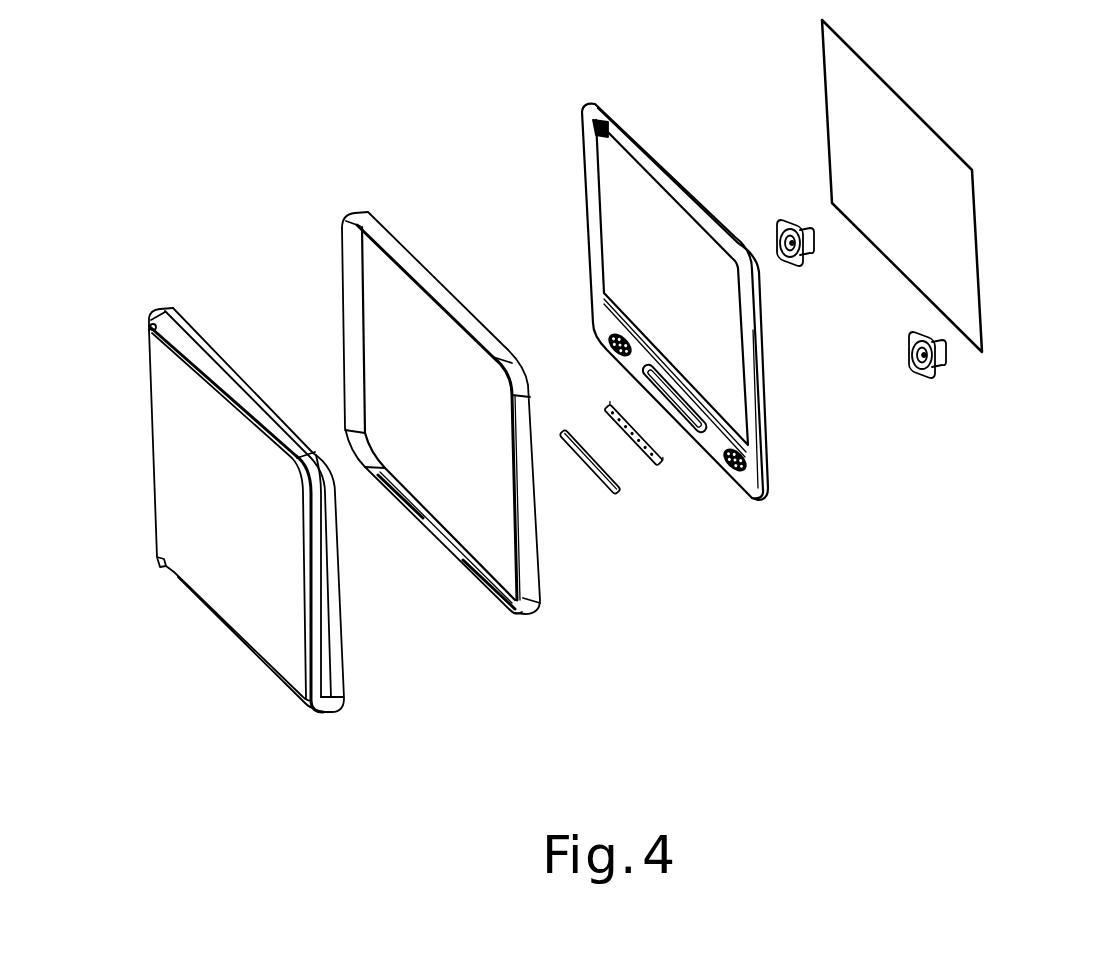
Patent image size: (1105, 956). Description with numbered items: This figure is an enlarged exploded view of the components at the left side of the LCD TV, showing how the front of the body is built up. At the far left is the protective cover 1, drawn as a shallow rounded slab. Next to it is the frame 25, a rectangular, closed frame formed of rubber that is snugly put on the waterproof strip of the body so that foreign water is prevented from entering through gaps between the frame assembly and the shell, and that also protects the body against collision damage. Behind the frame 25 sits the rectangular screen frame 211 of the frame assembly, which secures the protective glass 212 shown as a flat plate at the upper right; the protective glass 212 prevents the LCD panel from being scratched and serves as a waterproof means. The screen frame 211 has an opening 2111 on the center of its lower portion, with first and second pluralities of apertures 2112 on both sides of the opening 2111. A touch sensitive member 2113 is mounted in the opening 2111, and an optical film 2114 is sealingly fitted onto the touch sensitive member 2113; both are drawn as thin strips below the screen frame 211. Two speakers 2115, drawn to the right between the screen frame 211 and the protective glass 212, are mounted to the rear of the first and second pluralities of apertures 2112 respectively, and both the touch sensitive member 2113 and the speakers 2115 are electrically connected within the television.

The protective cover 1 is at (275, 405).
The frame 25 is at (422, 270).
The screen frame 211 is at (634, 341).
The opening 2111 is at (705, 435).
The plurality of apertures 2112 is at (593, 310).
The touch sensitive member 2113 is at (658, 468).
The optical film 2114 is at (620, 500).
The speakers 2115 is at (802, 257).
The protective glass 212 is at (968, 268).